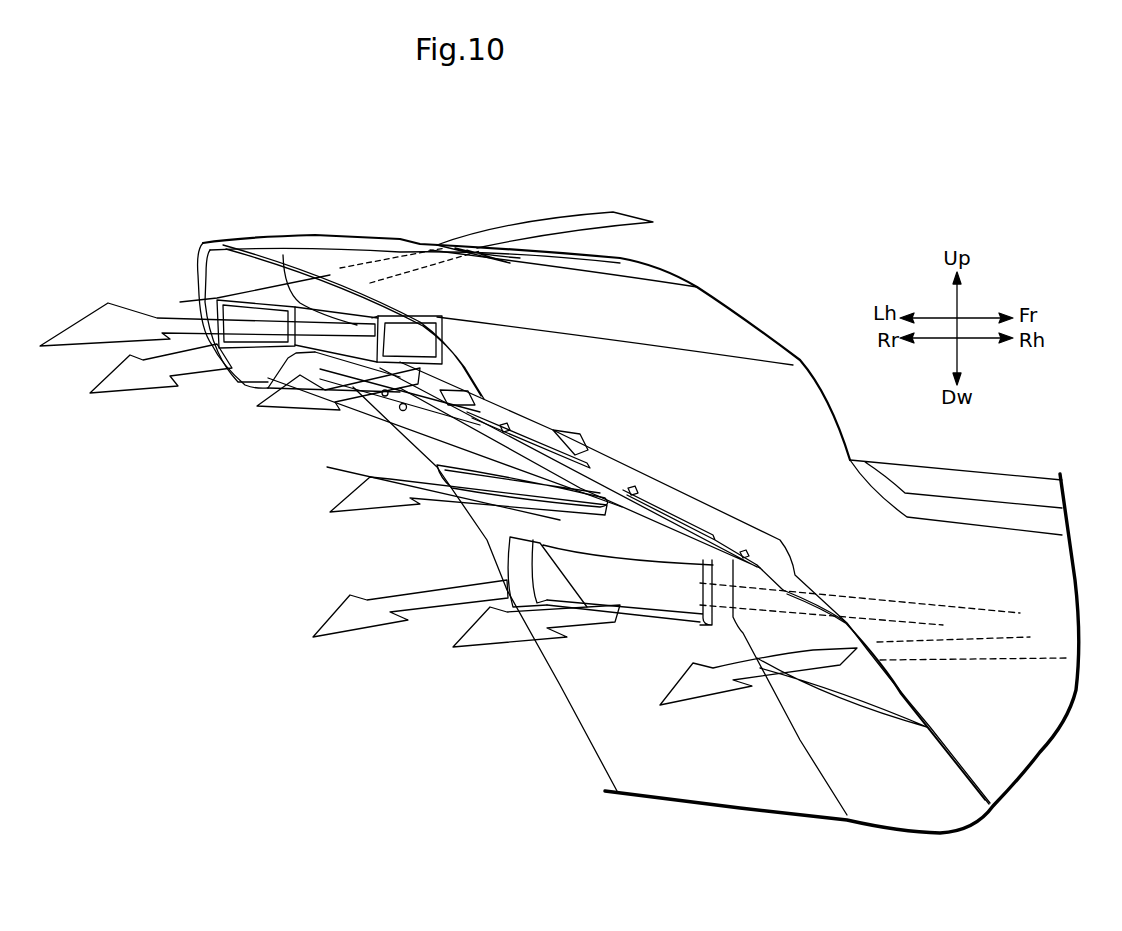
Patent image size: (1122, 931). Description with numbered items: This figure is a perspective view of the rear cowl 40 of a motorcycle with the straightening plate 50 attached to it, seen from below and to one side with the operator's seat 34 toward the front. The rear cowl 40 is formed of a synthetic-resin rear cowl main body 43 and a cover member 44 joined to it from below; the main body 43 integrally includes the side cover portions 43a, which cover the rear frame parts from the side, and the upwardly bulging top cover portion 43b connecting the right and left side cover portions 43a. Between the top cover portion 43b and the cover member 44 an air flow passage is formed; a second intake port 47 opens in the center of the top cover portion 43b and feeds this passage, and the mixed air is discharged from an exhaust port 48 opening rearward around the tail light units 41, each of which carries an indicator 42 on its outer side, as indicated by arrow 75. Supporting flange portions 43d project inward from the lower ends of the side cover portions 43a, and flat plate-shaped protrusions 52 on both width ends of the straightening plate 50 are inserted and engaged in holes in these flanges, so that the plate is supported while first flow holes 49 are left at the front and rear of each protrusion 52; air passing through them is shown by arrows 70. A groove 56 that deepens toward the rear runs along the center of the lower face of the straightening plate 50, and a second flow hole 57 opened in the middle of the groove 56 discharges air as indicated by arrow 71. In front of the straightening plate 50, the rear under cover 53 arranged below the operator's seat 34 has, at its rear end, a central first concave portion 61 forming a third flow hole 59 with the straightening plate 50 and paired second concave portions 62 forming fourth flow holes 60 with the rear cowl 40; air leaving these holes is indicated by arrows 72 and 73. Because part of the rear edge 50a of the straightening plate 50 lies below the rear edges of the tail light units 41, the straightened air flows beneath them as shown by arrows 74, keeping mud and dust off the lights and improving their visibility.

The operator's seat 34 is at (1008, 482).
The rear cowl 40 is at (453, 177).
The tail light unit 41 is at (228, 345).
The indicator 42 is at (227, 322).
The rear cowl main body 43 is at (400, 242).
The side cover portion 43a is at (815, 475).
The top cover portion 43b is at (743, 333).
The supporting flange portion 43d is at (230, 387).
The cover member 44 is at (357, 317).
The second intake port 47 is at (500, 265).
The exhaust port 48 is at (218, 260).
The first flow hole 49 is at (503, 425).
The straightening plate 50 is at (293, 420).
The rear edge of the straightening plate 50a is at (378, 317).
The protrusion 52 is at (530, 437).
The rear under cover 53 is at (803, 797).
The groove 56 is at (415, 437).
The second flow hole 57 is at (527, 497).
The third flow hole 59 is at (593, 580).
The fourth flow hole 60 is at (837, 633).
The first concave portion 61 is at (660, 613).
The second concave portion 62 is at (867, 705).
The arrows 70 is at (463, 380).
The arrow 71 is at (371, 510).
The arrow 72 is at (501, 645).
The arrows 73 is at (375, 630).
The arrows 74 is at (133, 387).
The arrow 75 is at (283, 255).